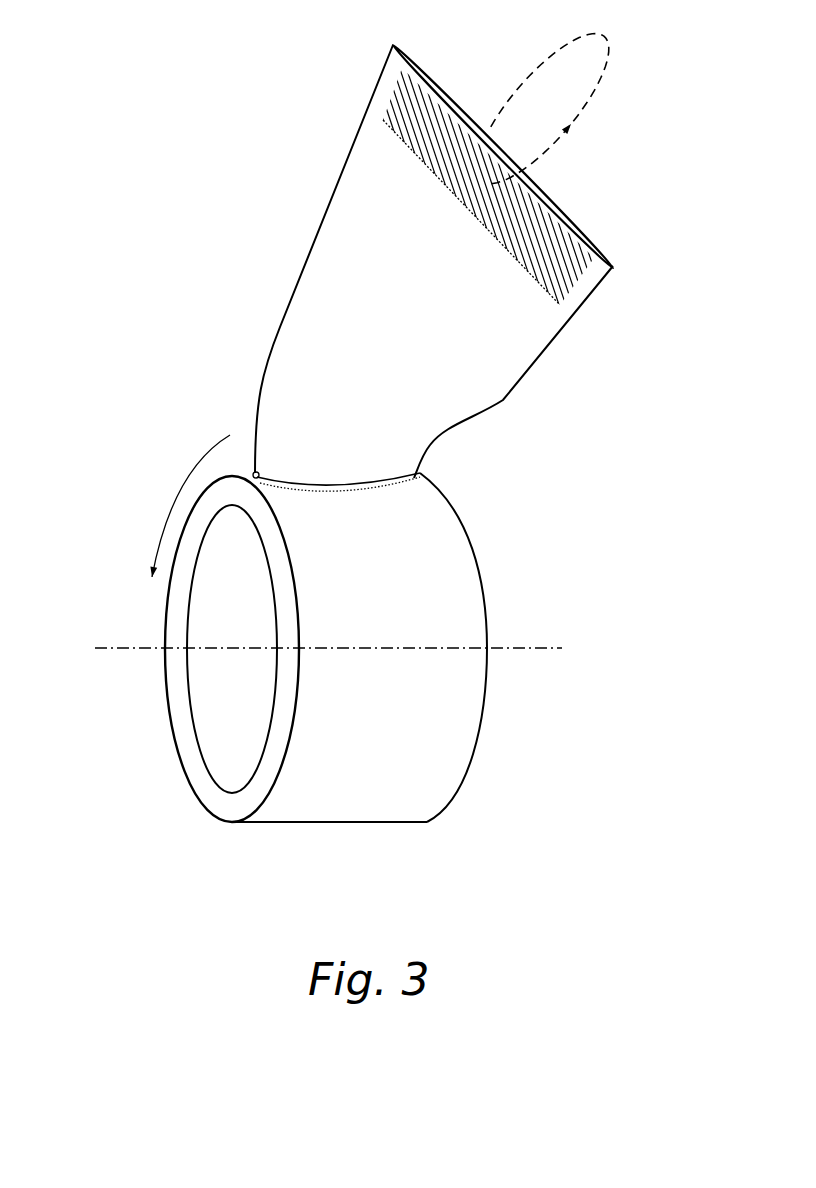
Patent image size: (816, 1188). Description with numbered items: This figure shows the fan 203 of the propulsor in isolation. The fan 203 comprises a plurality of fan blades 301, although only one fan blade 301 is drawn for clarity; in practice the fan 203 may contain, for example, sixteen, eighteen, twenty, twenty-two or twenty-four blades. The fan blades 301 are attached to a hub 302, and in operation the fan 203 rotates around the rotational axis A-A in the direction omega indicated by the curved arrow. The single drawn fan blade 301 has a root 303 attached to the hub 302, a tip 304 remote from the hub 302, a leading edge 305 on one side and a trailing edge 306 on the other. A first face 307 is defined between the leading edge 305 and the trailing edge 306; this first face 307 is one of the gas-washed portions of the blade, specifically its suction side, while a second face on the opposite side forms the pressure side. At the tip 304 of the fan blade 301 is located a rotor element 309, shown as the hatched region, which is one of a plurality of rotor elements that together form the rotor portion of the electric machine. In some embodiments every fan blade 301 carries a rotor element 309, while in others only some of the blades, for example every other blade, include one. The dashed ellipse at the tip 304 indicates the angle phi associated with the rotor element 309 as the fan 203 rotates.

The fan 203 is at (150, 75).
The fan blade 301 is at (362, 157).
The hub 302 is at (473, 547).
The root 303 is at (350, 486).
The tip 304 is at (560, 210).
The leading edge 305 is at (298, 273).
The trailing edge 306 is at (552, 350).
The first face 307 is at (413, 350).
The rotor element 309 is at (462, 190).